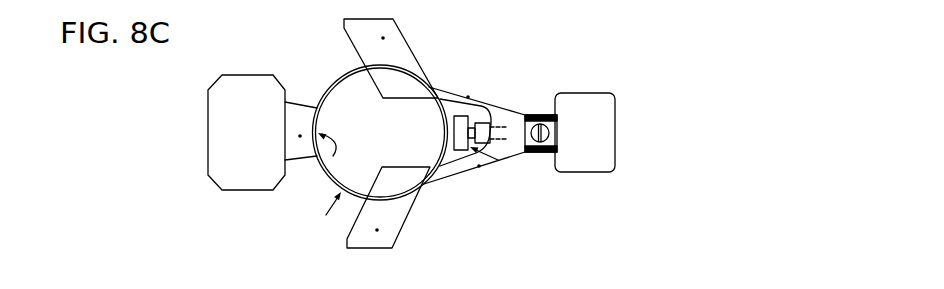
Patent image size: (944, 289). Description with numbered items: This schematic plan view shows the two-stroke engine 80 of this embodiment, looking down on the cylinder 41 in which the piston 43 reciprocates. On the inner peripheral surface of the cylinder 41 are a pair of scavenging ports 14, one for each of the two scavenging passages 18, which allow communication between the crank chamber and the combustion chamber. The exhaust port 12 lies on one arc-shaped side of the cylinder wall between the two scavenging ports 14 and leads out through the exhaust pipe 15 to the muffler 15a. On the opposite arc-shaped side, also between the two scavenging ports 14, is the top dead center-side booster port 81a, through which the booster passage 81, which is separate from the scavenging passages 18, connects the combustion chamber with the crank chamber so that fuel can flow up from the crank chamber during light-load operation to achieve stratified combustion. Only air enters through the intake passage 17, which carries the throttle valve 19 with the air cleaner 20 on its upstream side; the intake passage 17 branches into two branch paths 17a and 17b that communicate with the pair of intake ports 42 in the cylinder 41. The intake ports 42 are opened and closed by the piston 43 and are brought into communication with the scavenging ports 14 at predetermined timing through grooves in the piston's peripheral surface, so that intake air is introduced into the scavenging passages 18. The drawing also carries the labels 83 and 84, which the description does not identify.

The exhaust port 12 is at (299, 139).
The scavenging port 14 is at (430, 68).
The exhaust pipe 15 is at (300, 105).
The muffler 15a is at (245, 75).
The intake passage 17 is at (537, 110).
The branch path 17a is at (466, 84).
The branch path 17b is at (481, 150).
The scavenging passage 18 is at (385, 38).
The throttle valve 19 is at (549, 138).
The air cleaner 20 is at (590, 88).
The cylinder 41 is at (341, 77).
The intake port 42 is at (446, 88).
The piston 43 is at (324, 219).
The engine 80 is at (469, 96).
The booster passage 81 is at (498, 160).
The top dead center-side booster port 81a is at (479, 168).
The rotation direction 83 is at (333, 156).
The pin 84 is at (441, 131).